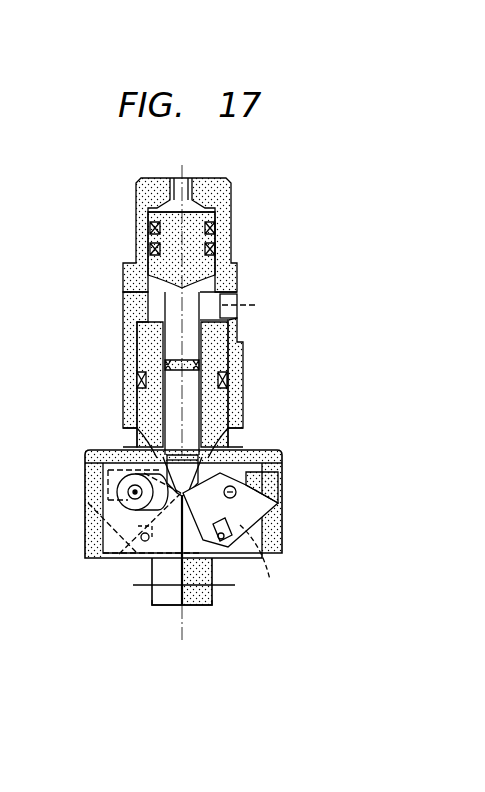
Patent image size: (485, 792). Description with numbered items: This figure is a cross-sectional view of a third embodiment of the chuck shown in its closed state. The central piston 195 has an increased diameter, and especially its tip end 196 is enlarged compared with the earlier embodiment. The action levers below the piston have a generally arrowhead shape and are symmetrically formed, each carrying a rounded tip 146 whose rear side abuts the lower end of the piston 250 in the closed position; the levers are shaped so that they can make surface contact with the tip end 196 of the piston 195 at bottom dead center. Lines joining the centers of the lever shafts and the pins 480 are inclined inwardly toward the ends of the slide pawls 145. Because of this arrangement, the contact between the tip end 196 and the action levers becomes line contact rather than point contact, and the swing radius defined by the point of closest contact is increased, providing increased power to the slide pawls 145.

The slide pawl 145 is at (165, 603).
The tip 146 is at (280, 455).
The piston 195 is at (192, 395).
The tip end 196 is at (237, 457).
The piston 250 is at (240, 343).
The pin 480 is at (140, 542).